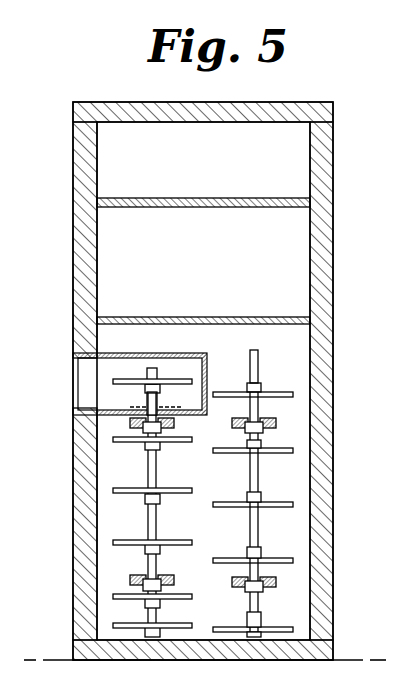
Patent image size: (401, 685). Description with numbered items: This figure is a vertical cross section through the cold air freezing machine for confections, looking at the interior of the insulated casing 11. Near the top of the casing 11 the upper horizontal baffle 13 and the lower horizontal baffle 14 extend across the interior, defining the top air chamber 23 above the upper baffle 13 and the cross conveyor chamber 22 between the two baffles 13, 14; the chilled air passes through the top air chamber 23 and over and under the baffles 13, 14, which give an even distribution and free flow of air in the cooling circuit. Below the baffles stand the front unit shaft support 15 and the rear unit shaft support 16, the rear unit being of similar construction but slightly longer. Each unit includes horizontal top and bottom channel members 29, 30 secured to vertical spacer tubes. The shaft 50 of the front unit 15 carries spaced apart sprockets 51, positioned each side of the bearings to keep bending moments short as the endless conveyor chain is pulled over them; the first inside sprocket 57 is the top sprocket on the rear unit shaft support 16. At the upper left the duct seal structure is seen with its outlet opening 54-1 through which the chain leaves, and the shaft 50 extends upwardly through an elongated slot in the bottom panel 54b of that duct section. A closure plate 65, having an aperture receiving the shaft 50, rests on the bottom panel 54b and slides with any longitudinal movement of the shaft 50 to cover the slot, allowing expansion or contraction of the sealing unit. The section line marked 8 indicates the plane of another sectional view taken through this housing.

The casing 11 is at (335, 266).
The upper horizontal baffle 13 is at (264, 198).
The lower horizontal baffle 14 is at (216, 317).
The cross conveyor chamber 22 is at (193, 262).
The top air chamber 23 is at (193, 161).
The front unit shaft support 15 is at (160, 522).
The rear unit shaft support 16 is at (296, 522).
The top channel member 29 is at (298, 412).
The bottom channel member 30 is at (272, 582).
The shaft 50 is at (146, 462).
The sprockets 51 is at (180, 488).
The first inside sprocket 57 is at (281, 392).
The outlet opening 54-1 is at (80, 392).
The bottom panel 54b is at (106, 416).
The closure plate 65 is at (150, 412).
The section line 8- 8 is at (115, 385).